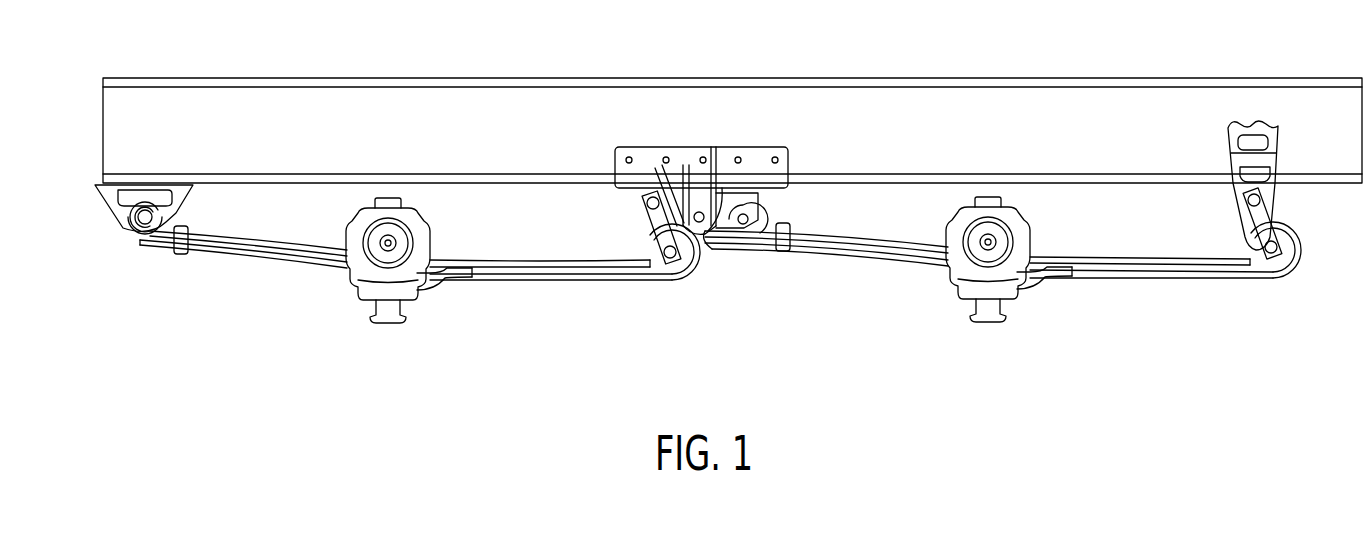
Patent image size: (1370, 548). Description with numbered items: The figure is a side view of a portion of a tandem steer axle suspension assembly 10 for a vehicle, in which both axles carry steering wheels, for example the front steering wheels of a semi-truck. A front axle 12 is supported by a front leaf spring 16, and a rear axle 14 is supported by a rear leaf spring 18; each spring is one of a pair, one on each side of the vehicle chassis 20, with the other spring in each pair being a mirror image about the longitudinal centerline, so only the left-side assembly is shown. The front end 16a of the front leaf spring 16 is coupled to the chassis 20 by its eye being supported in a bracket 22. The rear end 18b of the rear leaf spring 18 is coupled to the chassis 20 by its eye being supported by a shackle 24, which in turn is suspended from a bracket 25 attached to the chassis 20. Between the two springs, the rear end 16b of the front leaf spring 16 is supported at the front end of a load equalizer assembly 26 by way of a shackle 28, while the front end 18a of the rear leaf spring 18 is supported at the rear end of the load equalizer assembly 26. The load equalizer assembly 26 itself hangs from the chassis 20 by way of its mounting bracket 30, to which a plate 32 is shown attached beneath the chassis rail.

The tandem steer axle suspension assembly 10 is at (876, 319).
The front axle 12 is at (390, 243).
The rear axle 14 is at (990, 242).
The front leaf spring 16 is at (547, 282).
The front end of the front leaf spring 16a is at (142, 252).
The rear end of the front leaf spring 16b is at (684, 283).
The rear leaf spring 18 is at (1199, 282).
The front end of the rear leaf spring 18a is at (758, 256).
The rear end of the rear leaf spring 18b is at (1301, 275).
The chassis 20 is at (570, 87).
The bracket 22 is at (105, 198).
The shackle 24 is at (1262, 222).
The bracket 25 is at (1270, 163).
The load equalizer assembly 26 is at (782, 214).
The shackle 28 is at (660, 223).
The mounting bracket 30 is at (708, 146).
The mounting plate 32 is at (760, 157).